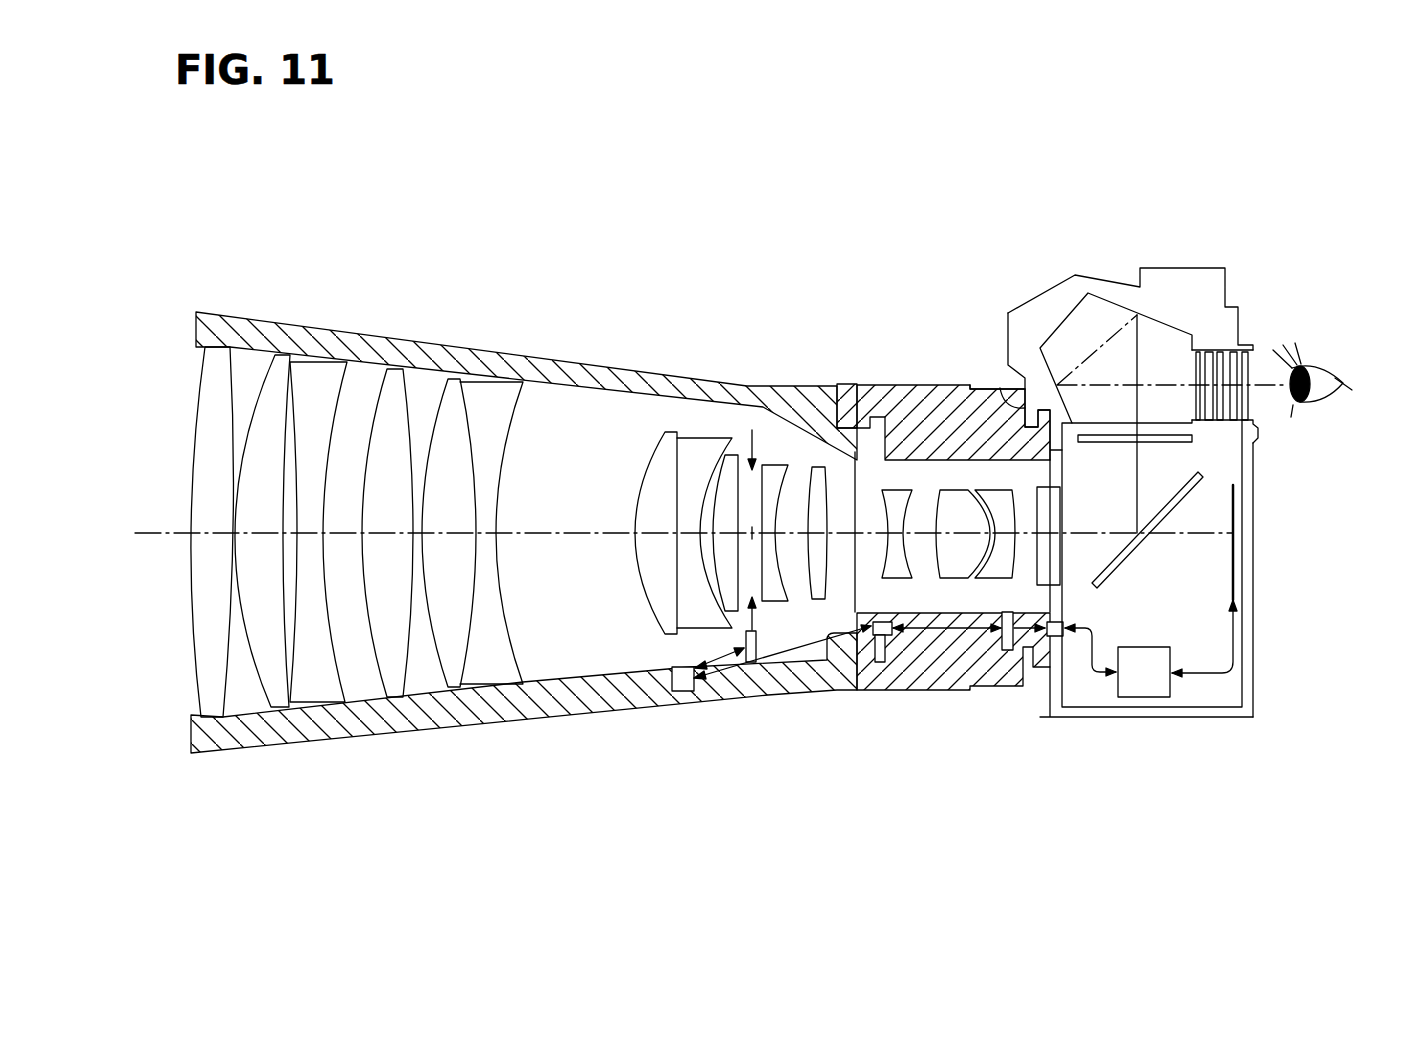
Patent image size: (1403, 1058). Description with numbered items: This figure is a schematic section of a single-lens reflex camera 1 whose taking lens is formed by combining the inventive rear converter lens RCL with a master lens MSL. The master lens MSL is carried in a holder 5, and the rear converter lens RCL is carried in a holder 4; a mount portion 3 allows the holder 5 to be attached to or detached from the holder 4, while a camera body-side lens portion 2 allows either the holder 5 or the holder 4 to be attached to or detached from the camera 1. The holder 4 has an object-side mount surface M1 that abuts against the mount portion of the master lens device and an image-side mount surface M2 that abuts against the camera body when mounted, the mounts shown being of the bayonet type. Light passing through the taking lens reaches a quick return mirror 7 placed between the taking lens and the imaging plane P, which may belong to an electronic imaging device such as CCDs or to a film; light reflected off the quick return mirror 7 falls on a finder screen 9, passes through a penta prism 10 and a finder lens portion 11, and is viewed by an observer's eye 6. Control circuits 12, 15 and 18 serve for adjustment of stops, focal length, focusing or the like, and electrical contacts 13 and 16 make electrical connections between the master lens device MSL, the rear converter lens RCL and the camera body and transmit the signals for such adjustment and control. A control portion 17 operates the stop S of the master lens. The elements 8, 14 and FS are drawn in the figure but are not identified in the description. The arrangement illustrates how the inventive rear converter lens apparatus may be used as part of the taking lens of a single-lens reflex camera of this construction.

The single-lens reflex camera 1 is at (1256, 665).
The camera body-side lens portion 2 is at (1008, 392).
The mount portion 3 is at (872, 390).
The holder for the rear converter lens 4 is at (973, 389).
The holder for the master lens 5 is at (677, 383).
The observer's eye 6 is at (1347, 383).
The quick return mirror 7 is at (1117, 570).
The image plane 8 is at (1205, 540).
The finder screen 9 is at (1192, 443).
The penta prism 10 is at (1164, 322).
The finder lens portion 11 is at (1240, 352).
The control circuit 12 is at (1148, 697).
The electrical contact 13 is at (1056, 636).
The lens-side mount 14 is at (1022, 682).
The control circuit 15 is at (1008, 650).
The electrical contact 16 is at (890, 636).
The control portion for the stop 17 is at (751, 664).
The control circuit 18 is at (683, 691).
The object-side mount surface M1 is at (847, 410).
The image-side mount surface M2 is at (1030, 412).
The stop S is at (753, 430).
The field stop FS is at (927, 480).
The imaging plane P is at (1256, 575).
The rear converter lens RCL is at (930, 705).
The master lens MSL is at (852, 791).